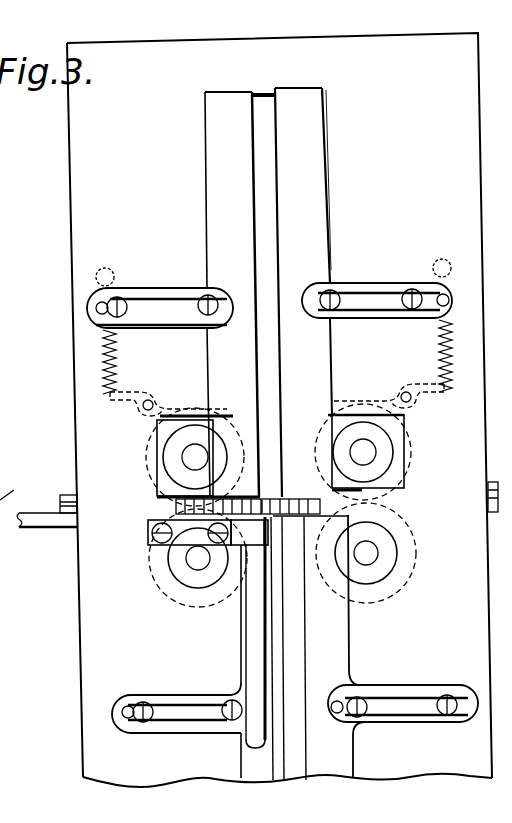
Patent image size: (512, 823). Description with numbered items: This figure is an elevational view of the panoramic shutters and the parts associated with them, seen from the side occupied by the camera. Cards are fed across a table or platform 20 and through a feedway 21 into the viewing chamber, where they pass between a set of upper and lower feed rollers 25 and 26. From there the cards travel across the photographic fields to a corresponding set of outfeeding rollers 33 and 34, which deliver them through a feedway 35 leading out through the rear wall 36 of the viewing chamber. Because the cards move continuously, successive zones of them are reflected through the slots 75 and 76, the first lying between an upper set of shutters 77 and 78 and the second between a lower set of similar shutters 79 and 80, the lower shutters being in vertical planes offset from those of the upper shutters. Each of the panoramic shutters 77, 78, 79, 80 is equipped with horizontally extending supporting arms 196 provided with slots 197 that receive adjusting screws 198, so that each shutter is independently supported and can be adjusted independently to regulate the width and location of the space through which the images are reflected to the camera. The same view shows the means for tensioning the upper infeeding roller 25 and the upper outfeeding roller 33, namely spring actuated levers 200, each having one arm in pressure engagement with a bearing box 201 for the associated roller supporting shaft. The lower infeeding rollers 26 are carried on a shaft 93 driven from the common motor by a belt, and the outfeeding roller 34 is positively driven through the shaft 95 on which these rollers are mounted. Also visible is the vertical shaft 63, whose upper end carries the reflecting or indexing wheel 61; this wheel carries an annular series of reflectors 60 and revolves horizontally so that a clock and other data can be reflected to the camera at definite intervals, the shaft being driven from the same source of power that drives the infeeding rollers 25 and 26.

The table or platform 20 is at (40, 522).
The feedway 21 is at (65, 515).
The upper feed roller 25 is at (147, 464).
The lower feed roller 26 is at (147, 574).
The upper outfeeding roller 33 is at (413, 437).
The lower outfeeding roller 34 is at (408, 521).
The feedway 35 is at (488, 500).
The rear wall 36 is at (11, 471).
The reflectors 60 is at (266, 505).
The reflecting wheel 61 is at (283, 499).
The vertical shaft 63 is at (252, 626).
The slot 75 is at (269, 257).
The slot 76 is at (297, 652).
The shutter 77 is at (294, 217).
The shutter 78 is at (222, 200).
The shutter 79 is at (335, 765).
The shutter 80 is at (263, 763).
The shaft 93 is at (195, 565).
The shaft 95 is at (370, 558).
The supporting arms 196 is at (147, 288).
The slots 197 is at (167, 312).
The adjusting screws 198 is at (205, 313).
The spring actuated levers 200 is at (157, 404).
The bearing box 201 is at (147, 480).